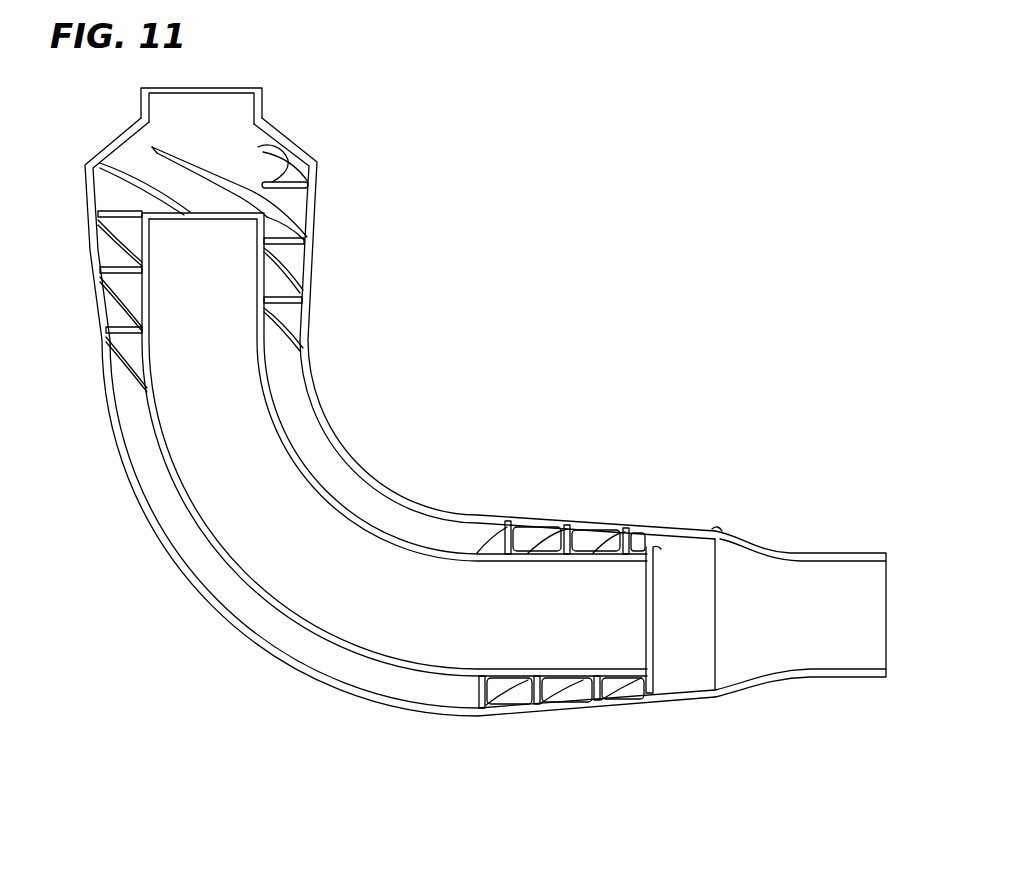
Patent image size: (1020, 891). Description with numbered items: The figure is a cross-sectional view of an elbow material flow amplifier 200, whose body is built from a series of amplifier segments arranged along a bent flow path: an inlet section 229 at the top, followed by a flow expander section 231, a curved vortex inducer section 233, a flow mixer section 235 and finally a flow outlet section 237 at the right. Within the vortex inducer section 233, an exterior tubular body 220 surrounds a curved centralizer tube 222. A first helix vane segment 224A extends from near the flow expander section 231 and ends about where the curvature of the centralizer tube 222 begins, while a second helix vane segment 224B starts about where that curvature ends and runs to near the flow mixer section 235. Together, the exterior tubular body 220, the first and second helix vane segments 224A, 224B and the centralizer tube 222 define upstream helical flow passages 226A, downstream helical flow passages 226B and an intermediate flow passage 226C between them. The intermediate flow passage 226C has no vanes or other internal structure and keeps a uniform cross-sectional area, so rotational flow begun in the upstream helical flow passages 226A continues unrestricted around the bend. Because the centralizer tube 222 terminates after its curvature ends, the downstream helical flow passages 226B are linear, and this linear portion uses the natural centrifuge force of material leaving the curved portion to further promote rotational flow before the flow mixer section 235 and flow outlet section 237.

The elbow material flow amplifier 200 is at (486, 309).
The exterior tubular body 220 is at (268, 655).
The centralizer tube 222 is at (295, 462).
The first helix vane segment 224A is at (277, 263).
The second helix vane segment 224B is at (540, 521).
The upstream helical flow passages 226A is at (91, 273).
The downstream helical flow passages 226B is at (562, 711).
The intermediate flow passage 226C is at (196, 585).
The inlet section 229 is at (260, 102).
The flow expander section 231 is at (283, 140).
The vortex inducer section 233 is at (328, 418).
The flow mixer section 235 is at (713, 525).
The flow outlet section 237 is at (870, 551).